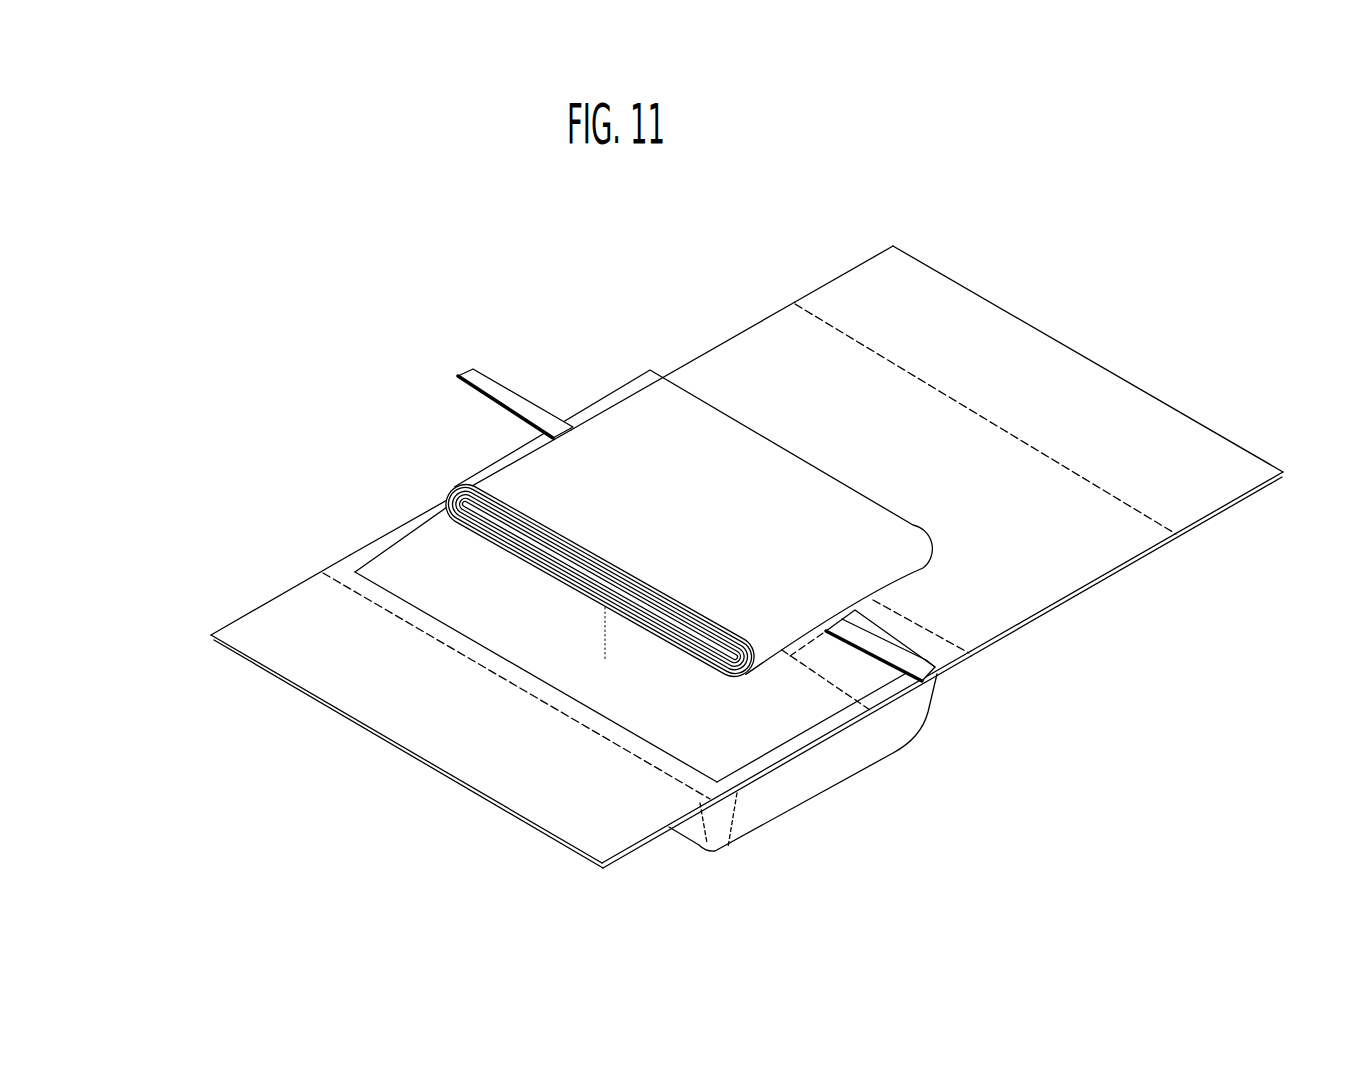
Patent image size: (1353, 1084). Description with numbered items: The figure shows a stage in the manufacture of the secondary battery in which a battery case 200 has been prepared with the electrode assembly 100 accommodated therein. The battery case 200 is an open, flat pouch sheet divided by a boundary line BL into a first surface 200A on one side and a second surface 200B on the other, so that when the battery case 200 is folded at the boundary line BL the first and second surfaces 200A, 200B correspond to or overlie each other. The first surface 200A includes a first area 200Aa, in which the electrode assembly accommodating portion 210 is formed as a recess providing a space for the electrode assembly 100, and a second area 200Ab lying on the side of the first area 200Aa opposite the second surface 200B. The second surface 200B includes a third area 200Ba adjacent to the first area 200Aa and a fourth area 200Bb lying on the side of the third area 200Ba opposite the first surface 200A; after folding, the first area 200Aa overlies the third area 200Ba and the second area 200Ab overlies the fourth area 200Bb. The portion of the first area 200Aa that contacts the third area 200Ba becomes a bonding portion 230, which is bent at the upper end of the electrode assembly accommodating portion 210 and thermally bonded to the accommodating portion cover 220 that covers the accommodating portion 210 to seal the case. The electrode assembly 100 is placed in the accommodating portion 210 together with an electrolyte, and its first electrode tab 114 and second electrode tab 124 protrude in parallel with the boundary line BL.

The electrode assembly 100 is at (791, 445).
The first electrode tab 114 is at (457, 376).
The second electrode tab 124 is at (940, 677).
The battery case 200 is at (723, 523).
The first surface 200A is at (567, 649).
The first area 200Aa is at (370, 542).
The second area 200Ab is at (325, 447).
The second surface 200B is at (927, 428).
The third area 200Ba is at (718, 346).
The fourth area 200Bb is at (835, 279).
The electrode assembly accommodating portion 210 is at (760, 818).
The accommodating portion cover 220 is at (1008, 603).
The bonding portion 230 is at (790, 758).
The boundary line BL is at (921, 627).